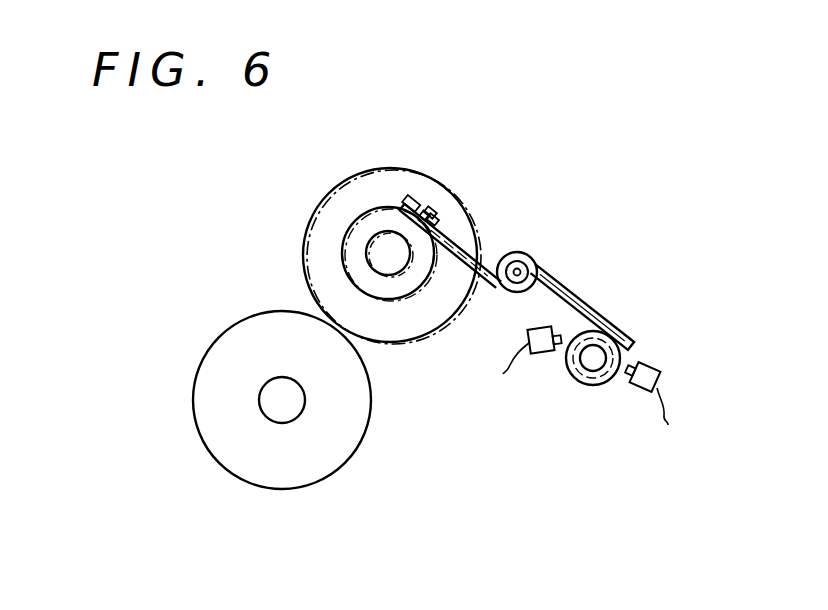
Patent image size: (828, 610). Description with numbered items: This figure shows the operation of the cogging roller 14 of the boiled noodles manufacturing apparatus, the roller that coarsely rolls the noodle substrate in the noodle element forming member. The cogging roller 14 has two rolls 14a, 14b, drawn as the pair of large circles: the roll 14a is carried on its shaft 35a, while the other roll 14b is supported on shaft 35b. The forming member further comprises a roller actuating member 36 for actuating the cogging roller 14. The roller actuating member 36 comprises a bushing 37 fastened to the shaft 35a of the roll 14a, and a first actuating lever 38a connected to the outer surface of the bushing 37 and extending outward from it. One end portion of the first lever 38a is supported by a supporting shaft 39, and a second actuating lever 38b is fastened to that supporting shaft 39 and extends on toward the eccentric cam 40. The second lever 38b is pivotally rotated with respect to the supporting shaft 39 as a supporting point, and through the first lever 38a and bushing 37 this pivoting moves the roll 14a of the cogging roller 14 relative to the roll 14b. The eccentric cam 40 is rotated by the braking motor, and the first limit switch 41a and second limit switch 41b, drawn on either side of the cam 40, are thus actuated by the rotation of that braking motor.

The cogging roller 14 is at (272, 288).
The roll 14a is at (407, 172).
The roll 14b is at (202, 383).
The shaft 35a is at (382, 258).
The shaft 35b is at (290, 413).
The roller actuating member 36 is at (518, 244).
The bushing 37 is at (418, 277).
The first actuating lever 38a is at (481, 260).
The second actuating lever 38b is at (595, 313).
The supporting shaft 39 is at (517, 272).
The eccentric cam 40 is at (580, 374).
The first limit switch 41a is at (646, 386).
The second limit switch 41b is at (526, 348).